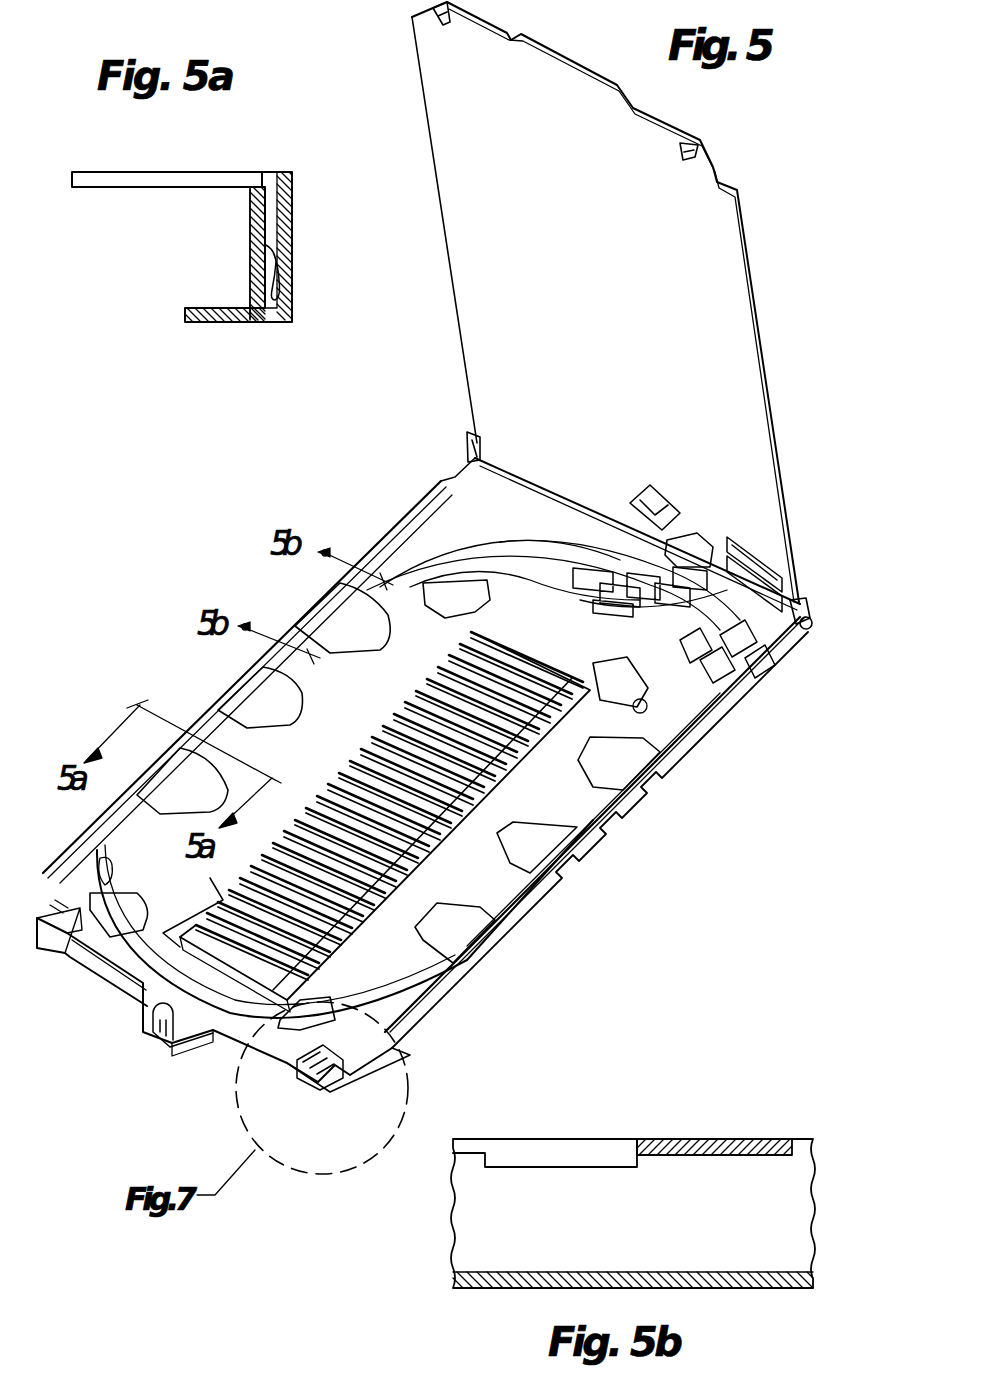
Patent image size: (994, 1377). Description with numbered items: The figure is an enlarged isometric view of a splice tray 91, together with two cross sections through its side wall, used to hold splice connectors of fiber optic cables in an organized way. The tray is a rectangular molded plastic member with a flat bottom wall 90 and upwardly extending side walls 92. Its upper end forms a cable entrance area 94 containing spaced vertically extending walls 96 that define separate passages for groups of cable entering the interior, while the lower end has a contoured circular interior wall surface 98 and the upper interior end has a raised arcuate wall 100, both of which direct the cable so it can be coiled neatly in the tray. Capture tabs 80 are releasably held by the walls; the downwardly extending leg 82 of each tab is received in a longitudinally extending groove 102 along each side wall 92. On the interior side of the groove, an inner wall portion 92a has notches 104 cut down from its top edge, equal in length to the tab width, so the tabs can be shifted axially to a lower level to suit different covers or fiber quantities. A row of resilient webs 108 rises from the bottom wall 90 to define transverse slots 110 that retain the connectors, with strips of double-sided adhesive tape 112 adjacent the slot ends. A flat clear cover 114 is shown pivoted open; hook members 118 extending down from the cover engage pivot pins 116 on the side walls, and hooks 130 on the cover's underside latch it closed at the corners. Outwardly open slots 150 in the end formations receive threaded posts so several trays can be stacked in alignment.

In FIG. 5A, the capture tab 80 is at (118, 172).
In FIG. 5B, the capture tab 80 is at (690, 1140).
In FIG. 5, the capture tab 80 is at (372, 628).
In FIG. 5A, the downwardly extending leg 82 is at (290, 205).
In FIG. 5B, the bottom wall 90 is at (750, 1272).
In FIG. 5, the bottom wall 90 is at (502, 890).
In FIG. 5, the splice tray 91 is at (674, 848).
In FIG. 5A, the side wall 92 is at (292, 240).
In FIG. 5, the side wall 92 is at (195, 712).
In FIG. 5A, the inner wall portion 92a is at (250, 240).
In FIG. 5B, the inner wall portion 92a is at (500, 1220).
In FIG. 5, the cable entrance area 94 is at (818, 550).
In FIG. 5, the spaced vertically extending walls 96 is at (655, 598).
In FIG. 5, the contoured circular interior wall surface 98 is at (97, 865).
In FIG. 5, the raised arcuate wall 100 is at (517, 600).
In FIG. 5A, the groove 102 is at (284, 278).
In FIG. 5B, the notch 104 is at (527, 1165).
In FIG. 5, the resilient web 108 is at (238, 877).
In FIG. 5, the slot 110 is at (318, 952).
In FIG. 5, the double-sided pressure sensitive adhesive tape 112 is at (405, 700).
In FIG. 5, the cover 114 is at (457, 318).
In FIG. 5, the pivot pin 116 is at (810, 625).
In FIG. 5, the hook member 118 is at (465, 445).
In FIG. 5, the hook 130 is at (443, 25).
In FIG. 5, the outwardly open slot 150 is at (660, 510).